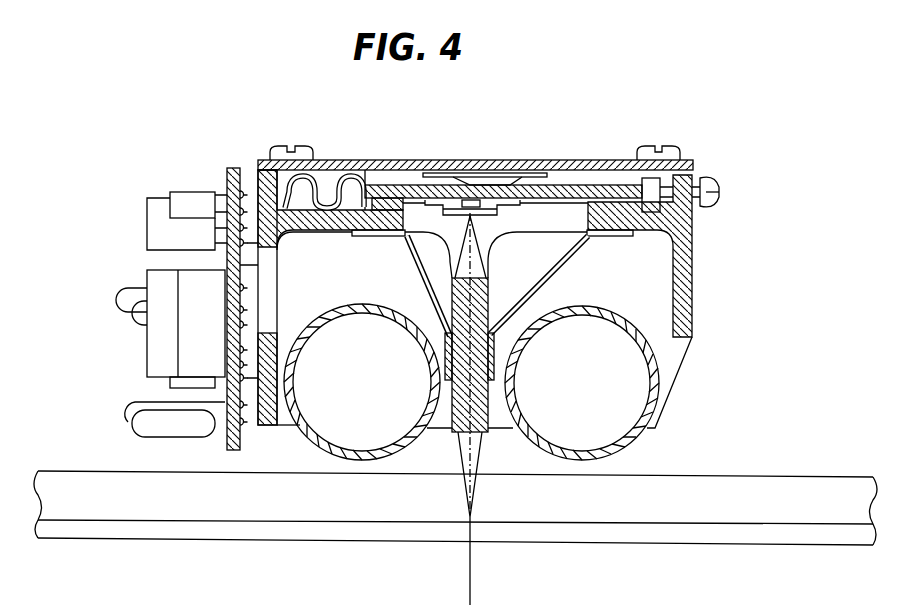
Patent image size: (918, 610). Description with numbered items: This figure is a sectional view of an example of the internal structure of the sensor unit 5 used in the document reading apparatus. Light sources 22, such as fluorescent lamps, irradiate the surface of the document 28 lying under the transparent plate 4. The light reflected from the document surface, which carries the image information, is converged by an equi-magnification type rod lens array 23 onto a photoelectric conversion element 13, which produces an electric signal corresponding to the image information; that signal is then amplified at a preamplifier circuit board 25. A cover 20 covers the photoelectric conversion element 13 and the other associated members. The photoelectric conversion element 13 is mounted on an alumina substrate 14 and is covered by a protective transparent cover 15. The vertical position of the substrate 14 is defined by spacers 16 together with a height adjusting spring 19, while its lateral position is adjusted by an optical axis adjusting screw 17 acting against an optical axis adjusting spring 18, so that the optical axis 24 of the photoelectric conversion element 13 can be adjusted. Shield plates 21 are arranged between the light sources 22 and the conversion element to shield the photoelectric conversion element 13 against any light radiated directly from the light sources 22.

The transparent plate 4 is at (333, 515).
The sensor unit 5 is at (307, 118).
The photoelectric conversion element 13 is at (487, 205).
The alumina substrate 14 is at (600, 190).
The protective transparent cover 15 is at (451, 175).
The spacers 16 is at (615, 208).
The optical axis adjusting screw 17 is at (712, 178).
The optical axis adjusting spring 18 is at (317, 177).
The height adjusting spring 19 is at (499, 208).
The cover 20 is at (401, 172).
The shield plates 21 is at (407, 251).
The light sources 22 is at (625, 323).
The equi-magnification type rod lens array 23 is at (488, 402).
The optical axis 24 is at (470, 571).
The preamplifier circuit board 25 is at (232, 168).
The document 28 is at (735, 537).